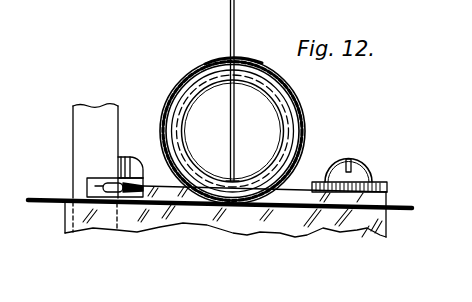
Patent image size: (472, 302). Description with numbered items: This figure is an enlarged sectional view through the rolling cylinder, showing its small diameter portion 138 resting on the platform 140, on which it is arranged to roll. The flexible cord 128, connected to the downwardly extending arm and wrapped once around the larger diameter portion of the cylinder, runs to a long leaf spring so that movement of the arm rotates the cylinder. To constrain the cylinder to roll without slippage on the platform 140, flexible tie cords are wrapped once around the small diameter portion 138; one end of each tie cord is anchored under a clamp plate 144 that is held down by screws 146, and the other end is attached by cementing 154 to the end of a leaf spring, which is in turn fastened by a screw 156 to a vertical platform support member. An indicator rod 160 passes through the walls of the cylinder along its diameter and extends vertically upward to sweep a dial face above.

The flexible cord 128 is at (287, 209).
The small diameter portion 138 is at (289, 94).
The platform 140 is at (160, 204).
The clamp plate 144 is at (315, 176).
The screws 146 is at (372, 168).
The cementing 154 is at (118, 178).
The screw 156 is at (138, 173).
The indicator rod 160 is at (236, 33).